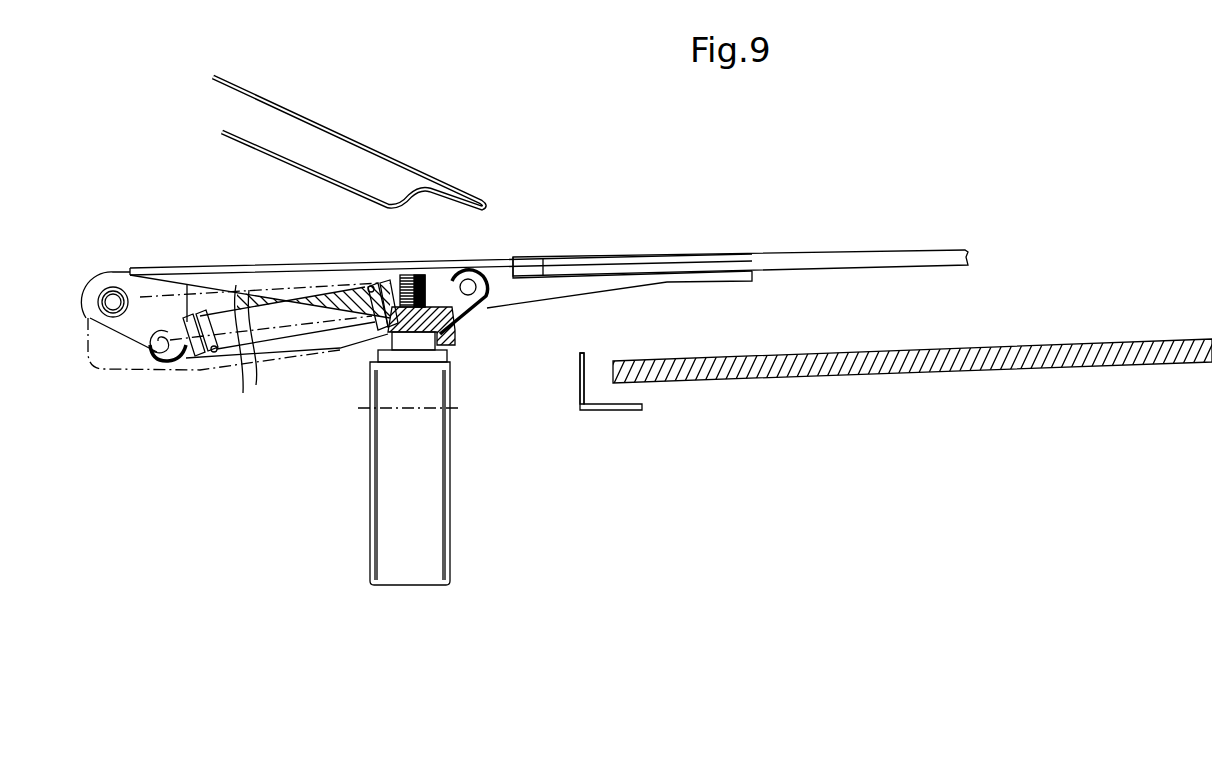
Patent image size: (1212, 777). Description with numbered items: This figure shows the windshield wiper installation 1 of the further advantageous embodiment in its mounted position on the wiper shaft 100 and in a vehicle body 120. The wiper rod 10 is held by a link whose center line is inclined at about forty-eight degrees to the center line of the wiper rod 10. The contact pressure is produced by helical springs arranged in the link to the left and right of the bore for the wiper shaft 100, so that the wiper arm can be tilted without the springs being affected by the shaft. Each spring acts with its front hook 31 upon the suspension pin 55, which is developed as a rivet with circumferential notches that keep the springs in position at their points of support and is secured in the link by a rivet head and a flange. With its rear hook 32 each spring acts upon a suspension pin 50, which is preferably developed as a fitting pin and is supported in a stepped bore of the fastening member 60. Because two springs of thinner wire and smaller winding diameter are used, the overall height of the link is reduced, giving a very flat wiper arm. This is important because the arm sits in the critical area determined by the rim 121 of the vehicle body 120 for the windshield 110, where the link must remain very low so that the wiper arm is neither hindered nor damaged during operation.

The windshield wiper arm assembly 1 is at (720, 210).
The wiper rod 10 is at (816, 253).
The first hook 31 is at (473, 280).
The second hook 32 is at (168, 363).
The suspension pin 50 is at (152, 358).
The suspension pin 55 is at (484, 280).
The fastening member 60 is at (248, 360).
The wiper shaft 100 is at (437, 432).
The windshield 110 is at (933, 372).
The vehicle body 120 is at (397, 160).
The rim 121 is at (580, 360).